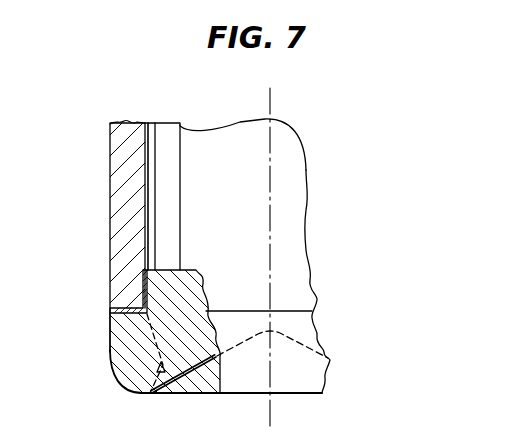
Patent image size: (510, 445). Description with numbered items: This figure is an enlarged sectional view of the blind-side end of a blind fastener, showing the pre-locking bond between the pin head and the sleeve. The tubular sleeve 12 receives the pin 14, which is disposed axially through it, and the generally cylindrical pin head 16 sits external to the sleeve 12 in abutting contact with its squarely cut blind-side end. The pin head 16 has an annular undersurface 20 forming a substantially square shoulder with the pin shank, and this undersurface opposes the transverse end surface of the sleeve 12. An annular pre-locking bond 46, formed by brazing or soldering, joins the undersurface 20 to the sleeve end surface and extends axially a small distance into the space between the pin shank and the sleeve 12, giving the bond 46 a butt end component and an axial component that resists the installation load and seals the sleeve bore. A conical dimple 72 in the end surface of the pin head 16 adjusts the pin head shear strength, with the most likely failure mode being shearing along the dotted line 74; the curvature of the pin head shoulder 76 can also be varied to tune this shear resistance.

The tubular sleeve 12 is at (112, 160).
The pin 14 is at (306, 167).
The pin head 16 is at (322, 395).
The annular undersurface 20 is at (110, 318).
The pre-locking bond 46 is at (138, 302).
The conical dimple 72 is at (204, 366).
The dotted line 74 is at (137, 398).
The pin head shoulder 76 is at (108, 368).